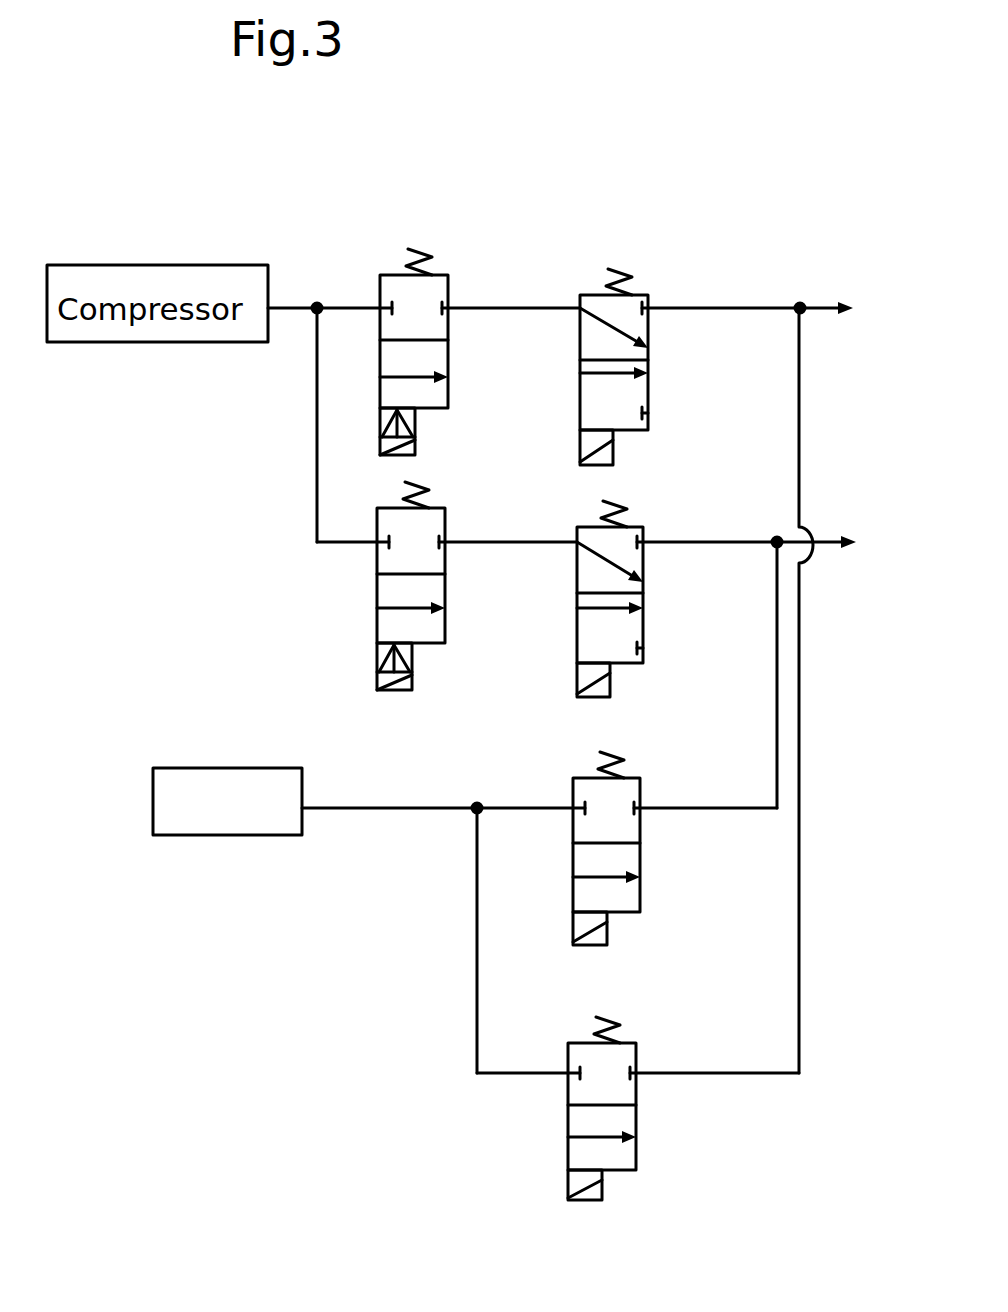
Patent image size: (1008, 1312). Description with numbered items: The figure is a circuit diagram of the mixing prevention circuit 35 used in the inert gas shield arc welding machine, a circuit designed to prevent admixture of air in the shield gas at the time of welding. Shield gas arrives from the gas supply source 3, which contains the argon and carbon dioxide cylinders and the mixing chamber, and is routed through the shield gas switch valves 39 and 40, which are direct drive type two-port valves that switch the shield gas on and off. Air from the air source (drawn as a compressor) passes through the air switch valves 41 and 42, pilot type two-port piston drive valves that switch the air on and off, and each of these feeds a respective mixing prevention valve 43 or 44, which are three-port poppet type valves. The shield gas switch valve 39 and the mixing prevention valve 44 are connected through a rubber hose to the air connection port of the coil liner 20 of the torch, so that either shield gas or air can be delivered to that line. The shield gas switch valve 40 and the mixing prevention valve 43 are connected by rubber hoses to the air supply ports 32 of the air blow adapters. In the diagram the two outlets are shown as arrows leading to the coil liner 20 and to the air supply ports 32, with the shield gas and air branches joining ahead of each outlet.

The gas supply unit 3 is at (227, 768).
The coil liner 20 is at (824, 532).
The air supply ports 32 is at (822, 304).
The mixing prevention circuit 35 is at (722, 262).
The shield gas switch valve 39 is at (640, 865).
The shield gas switch valve 40 is at (636, 1121).
The air switch valve 41 is at (448, 390).
The air switch valve 42 is at (445, 622).
The mixing prevention valve 43 is at (648, 392).
The mixing prevention valve 44 is at (643, 628).